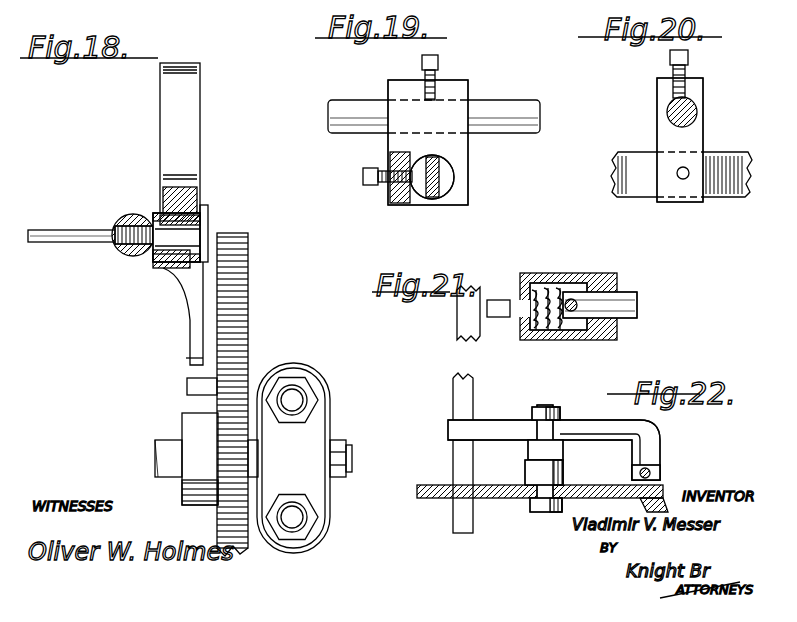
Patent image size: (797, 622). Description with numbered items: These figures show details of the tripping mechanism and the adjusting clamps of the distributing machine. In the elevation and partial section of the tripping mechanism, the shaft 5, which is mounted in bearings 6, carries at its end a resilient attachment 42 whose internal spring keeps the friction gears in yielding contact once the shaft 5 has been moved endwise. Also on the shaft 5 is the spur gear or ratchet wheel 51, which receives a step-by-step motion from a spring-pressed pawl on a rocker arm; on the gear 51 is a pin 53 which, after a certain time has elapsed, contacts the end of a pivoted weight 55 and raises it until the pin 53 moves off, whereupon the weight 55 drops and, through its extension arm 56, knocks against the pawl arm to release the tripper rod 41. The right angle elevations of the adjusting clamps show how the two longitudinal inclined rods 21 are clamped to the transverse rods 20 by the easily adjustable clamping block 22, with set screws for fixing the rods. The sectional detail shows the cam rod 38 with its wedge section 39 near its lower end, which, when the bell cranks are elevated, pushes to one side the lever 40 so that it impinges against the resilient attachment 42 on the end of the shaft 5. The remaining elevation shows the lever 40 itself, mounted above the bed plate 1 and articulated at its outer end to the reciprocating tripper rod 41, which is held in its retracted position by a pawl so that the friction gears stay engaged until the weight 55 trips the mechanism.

In FIG. 22, the bed plate 1 is at (440, 486).
In FIG. 18, the shaft 5 is at (165, 460).
In FIG. 21, the shaft 5 is at (623, 303).
In FIG. 18, the bearings 6 is at (322, 395).
In FIG. 19, the transverse rods 20 is at (431, 204).
In FIG. 20, the transverse rods 20 is at (613, 189).
In FIG. 19, the longitudinal inclined rods 21 is at (505, 104).
In FIG. 20, the longitudinal inclined rods 21 is at (668, 106).
In FIG. 19, the clamping block 22 is at (470, 181).
In FIG. 20, the clamping block 22 is at (700, 141).
In FIG. 21, the cam rod 38 is at (466, 303).
In FIG. 22, the cam rod 38 is at (450, 399).
In FIG. 21, the wedge section 39 is at (470, 330).
In FIG. 22, the wedge section 39 is at (462, 459).
In FIG. 21, the lever 40 is at (505, 318).
In FIG. 22, the lever 40 is at (592, 427).
In FIG. 18, the tripper rod 41 is at (53, 232).
In FIG. 22, the tripper rod 41 is at (665, 475).
In FIG. 18, the resilient attachment 42 is at (158, 266).
In FIG. 21, the resilient attachment 42 is at (578, 274).
In FIG. 18, the ratchet wheel 51 is at (247, 297).
In FIG. 18, the pin 53 is at (190, 384).
In FIG. 18, the pivoted weight 55 is at (173, 110).
In FIG. 18, the extension arm 56 is at (193, 330).